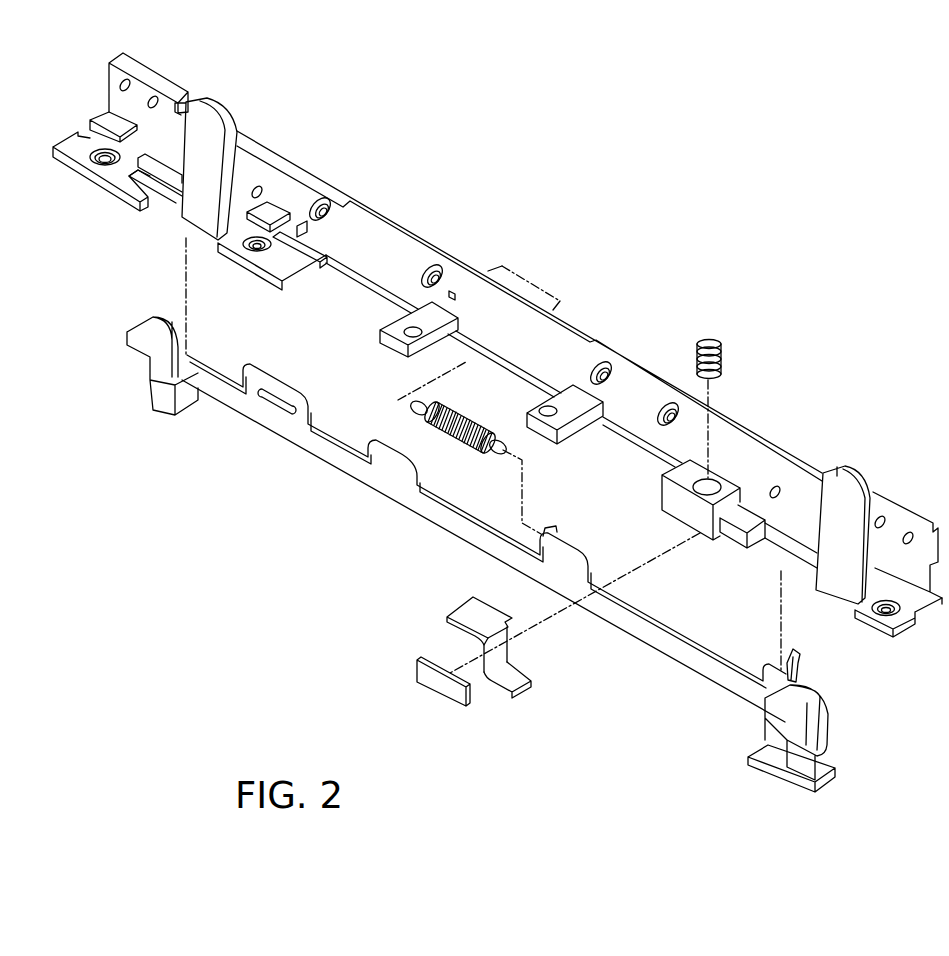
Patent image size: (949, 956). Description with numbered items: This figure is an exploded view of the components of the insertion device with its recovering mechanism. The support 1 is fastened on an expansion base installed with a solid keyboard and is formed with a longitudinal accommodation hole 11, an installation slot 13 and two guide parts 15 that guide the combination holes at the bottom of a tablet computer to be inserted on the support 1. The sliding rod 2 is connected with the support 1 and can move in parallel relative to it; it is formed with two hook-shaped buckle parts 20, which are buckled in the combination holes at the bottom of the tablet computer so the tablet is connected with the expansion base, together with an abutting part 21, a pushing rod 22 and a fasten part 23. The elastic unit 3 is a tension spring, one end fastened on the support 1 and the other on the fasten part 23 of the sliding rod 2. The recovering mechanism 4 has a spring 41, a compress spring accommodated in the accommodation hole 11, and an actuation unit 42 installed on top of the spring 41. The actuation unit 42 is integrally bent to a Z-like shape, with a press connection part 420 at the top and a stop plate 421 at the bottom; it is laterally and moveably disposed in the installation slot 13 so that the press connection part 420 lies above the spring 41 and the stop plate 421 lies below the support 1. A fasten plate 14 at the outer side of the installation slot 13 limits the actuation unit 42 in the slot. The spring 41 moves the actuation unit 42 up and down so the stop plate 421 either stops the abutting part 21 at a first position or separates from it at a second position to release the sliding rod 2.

The support 1 is at (555, 350).
The sliding rod 2 is at (484, 538).
The elastic unit 3 is at (463, 420).
The recovering mechanism 4 is at (472, 645).
The accommodation hole 11 is at (713, 485).
The installation slot 13 is at (720, 527).
The fasten plate 14 is at (445, 688).
The guide part 15 is at (207, 143).
The buckle part 20 is at (146, 335).
The abutting part 21 is at (767, 760).
The pushing rod 22 is at (797, 658).
The fasten part 23 is at (558, 537).
The spring 41 is at (712, 342).
The actuation unit 42 is at (492, 645).
The press connection part 420 is at (473, 607).
The stop plate 421 is at (517, 677).